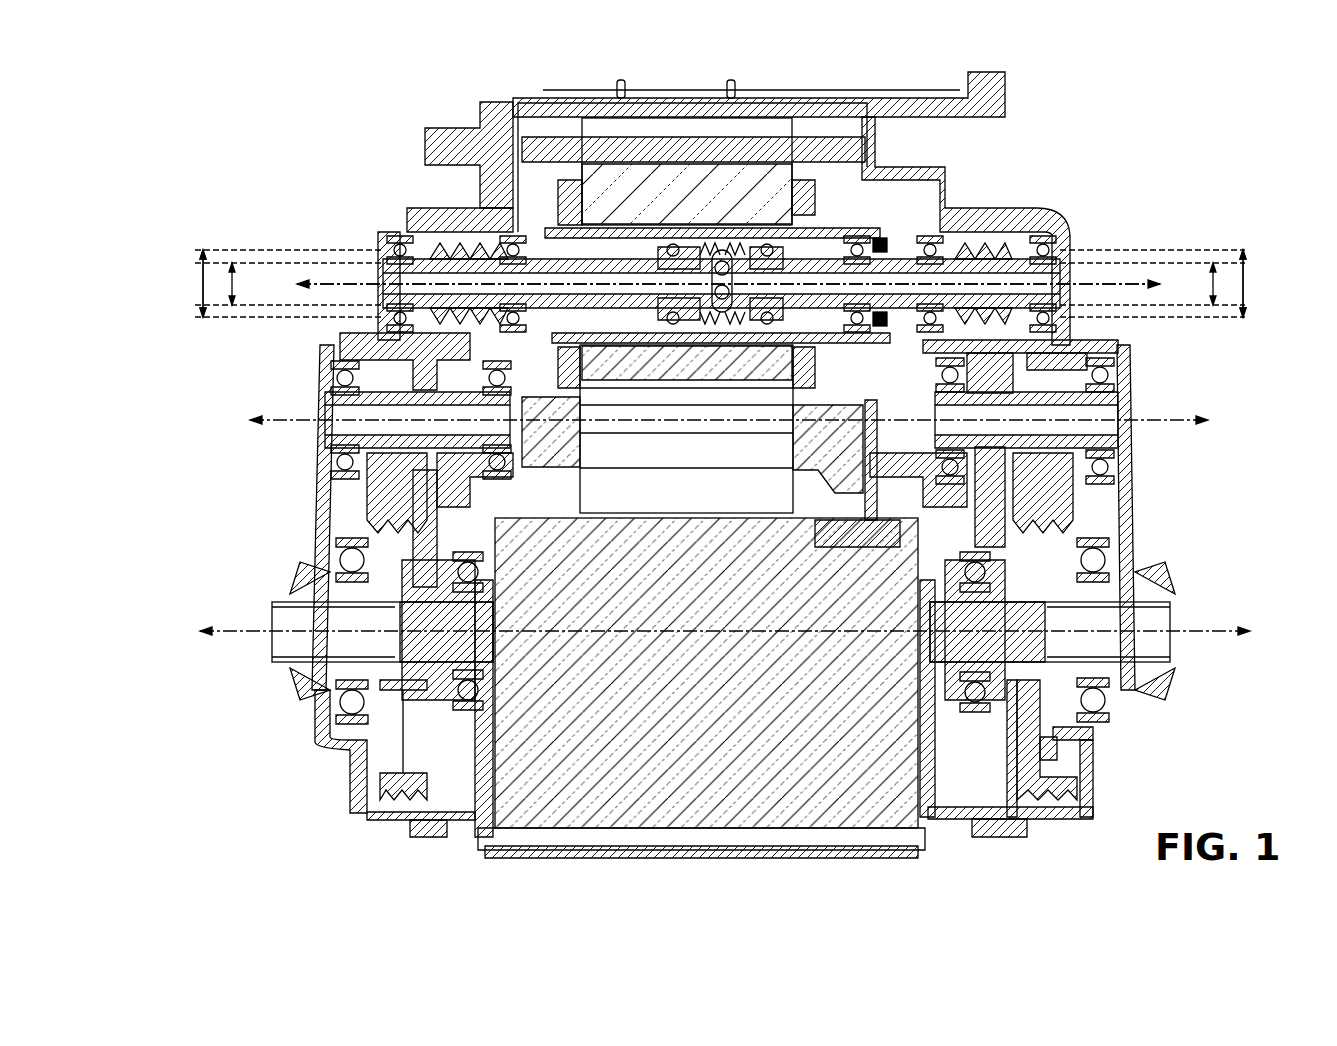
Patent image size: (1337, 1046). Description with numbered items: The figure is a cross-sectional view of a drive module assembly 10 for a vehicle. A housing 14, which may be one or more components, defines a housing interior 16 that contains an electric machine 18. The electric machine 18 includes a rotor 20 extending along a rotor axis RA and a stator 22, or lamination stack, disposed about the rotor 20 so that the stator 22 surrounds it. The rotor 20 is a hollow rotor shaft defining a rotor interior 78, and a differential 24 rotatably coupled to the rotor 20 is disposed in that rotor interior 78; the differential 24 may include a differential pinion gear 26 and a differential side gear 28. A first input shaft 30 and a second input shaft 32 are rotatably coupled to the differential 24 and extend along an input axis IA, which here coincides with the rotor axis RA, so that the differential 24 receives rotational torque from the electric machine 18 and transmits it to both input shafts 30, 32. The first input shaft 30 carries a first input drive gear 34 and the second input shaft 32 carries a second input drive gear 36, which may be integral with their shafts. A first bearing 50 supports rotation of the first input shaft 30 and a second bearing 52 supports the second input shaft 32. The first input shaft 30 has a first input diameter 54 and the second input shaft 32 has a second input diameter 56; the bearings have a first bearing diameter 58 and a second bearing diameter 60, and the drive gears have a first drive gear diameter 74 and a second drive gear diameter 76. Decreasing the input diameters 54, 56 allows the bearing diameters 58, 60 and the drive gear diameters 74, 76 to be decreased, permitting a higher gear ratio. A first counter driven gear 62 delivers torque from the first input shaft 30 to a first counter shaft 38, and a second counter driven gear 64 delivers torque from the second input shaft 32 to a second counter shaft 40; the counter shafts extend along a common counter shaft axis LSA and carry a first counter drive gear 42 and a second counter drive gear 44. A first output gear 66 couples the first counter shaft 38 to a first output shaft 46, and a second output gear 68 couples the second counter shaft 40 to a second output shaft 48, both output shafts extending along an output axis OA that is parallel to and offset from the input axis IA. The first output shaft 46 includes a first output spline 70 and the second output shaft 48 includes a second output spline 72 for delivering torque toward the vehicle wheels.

The drive module assembly 10 is at (295, 148).
The housing 14 is at (582, 100).
The housing interior 16 is at (578, 110).
The electric machine 18 is at (695, 133).
The rotor 20 is at (868, 168).
The stator 22 is at (750, 205).
The differential 24 is at (720, 245).
The differential pinion gear 26 is at (750, 248).
The differential side gear 28 is at (690, 240).
The first input shaft 30 is at (530, 248).
The second input shaft 32 is at (900, 250).
The first input drive gear 34 is at (462, 245).
The second input drive gear 36 is at (985, 245).
The first counter shaft 38 is at (322, 445).
The second counter shaft 40 is at (1115, 448).
The first counter drive gear 42 is at (392, 510).
The second counter drive gear 44 is at (1045, 470).
The first output shaft 46 is at (315, 690).
The second output shaft 48 is at (1150, 672).
The first bearing 50 is at (403, 236).
The second bearing 52 is at (1045, 245).
The first input diameter 54 is at (233, 290).
The second input diameter 56 is at (1213, 275).
The first bearing diameter 58 is at (200, 297).
The second bearing diameter 60 is at (1247, 278).
The first counter driven gear 62 is at (440, 358).
The second counter driven gear 64 is at (1010, 357).
The first output gear 66 is at (395, 515).
The second output gear 68 is at (1052, 505).
The first output spline 70 is at (278, 645).
The second output spline 72 is at (1160, 645).
The first drive gear diameter 74 is at (203, 283).
The second drive gear diameter 76 is at (1243, 283).
The rotor interior 78 is at (838, 233).
The rotor axis RA is at (1100, 275).
The input axis IA is at (728, 283).
The layshaft axis LSA is at (1150, 415).
The output axis OA is at (1200, 625).